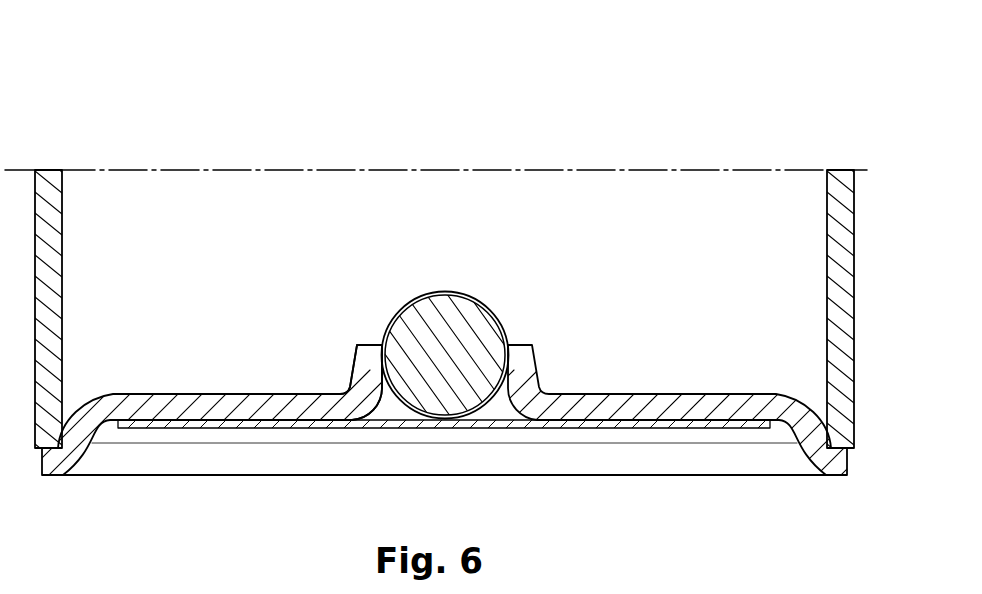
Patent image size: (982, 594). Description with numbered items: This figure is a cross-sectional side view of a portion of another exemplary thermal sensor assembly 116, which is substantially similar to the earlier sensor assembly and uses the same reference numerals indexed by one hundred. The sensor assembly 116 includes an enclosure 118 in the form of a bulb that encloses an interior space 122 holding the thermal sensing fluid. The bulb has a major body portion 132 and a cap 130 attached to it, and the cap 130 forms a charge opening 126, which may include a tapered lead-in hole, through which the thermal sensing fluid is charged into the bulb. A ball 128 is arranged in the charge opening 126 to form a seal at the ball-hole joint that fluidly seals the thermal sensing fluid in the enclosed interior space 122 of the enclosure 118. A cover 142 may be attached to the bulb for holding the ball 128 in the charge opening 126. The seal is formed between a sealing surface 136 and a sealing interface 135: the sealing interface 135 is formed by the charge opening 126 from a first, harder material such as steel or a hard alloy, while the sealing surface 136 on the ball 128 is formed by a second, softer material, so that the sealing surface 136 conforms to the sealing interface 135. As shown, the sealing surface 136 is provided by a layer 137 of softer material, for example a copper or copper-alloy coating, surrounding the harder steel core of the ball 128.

The thermal sensor assembly 116 is at (170, 62).
The enclosure 118 is at (55, 155).
The interior space 122 is at (218, 207).
The charge opening 126 is at (507, 366).
The ball 128 is at (462, 332).
The cap 130 is at (830, 457).
The major body portion 132 is at (835, 353).
The sealing interface 135 is at (418, 398).
The sealing surface 136 is at (418, 393).
The layer 137 is at (422, 294).
The cover 142 is at (227, 422).